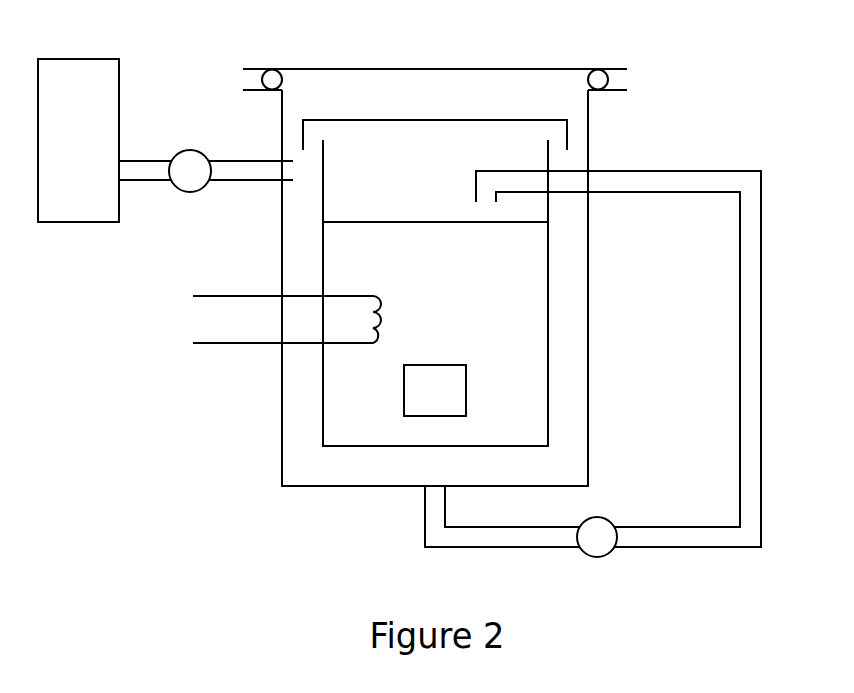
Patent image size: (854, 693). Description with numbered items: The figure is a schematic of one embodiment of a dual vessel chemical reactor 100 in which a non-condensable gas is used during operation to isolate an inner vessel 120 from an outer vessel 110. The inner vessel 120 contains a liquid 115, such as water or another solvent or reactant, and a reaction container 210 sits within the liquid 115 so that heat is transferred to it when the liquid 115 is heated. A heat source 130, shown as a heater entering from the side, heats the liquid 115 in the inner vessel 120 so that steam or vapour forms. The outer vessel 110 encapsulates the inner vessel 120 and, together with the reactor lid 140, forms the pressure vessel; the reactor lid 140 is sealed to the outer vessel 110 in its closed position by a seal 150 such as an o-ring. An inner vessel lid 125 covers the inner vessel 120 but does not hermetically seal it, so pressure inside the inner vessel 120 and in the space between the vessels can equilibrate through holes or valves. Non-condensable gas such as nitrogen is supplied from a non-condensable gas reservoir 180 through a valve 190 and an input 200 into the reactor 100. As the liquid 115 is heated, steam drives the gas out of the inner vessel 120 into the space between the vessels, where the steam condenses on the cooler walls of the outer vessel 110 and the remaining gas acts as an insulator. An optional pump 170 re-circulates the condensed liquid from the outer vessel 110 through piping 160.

The dual vessel chemical reactor 100 is at (318, 540).
The outer vessel 110 is at (587, 417).
The liquid 115 is at (422, 278).
The inner vessel 120 is at (548, 312).
The inner vessel lid 125 is at (568, 135).
The heat source 130 is at (263, 296).
The reactor lid 140 is at (433, 69).
The seal 150 is at (608, 82).
The piping 160 is at (748, 282).
The pump 170 is at (597, 557).
The non-condensable gas reservoir 180 is at (65, 126).
The valve 190 is at (144, 161).
The input 200 is at (191, 192).
The reaction container 210 is at (455, 406).